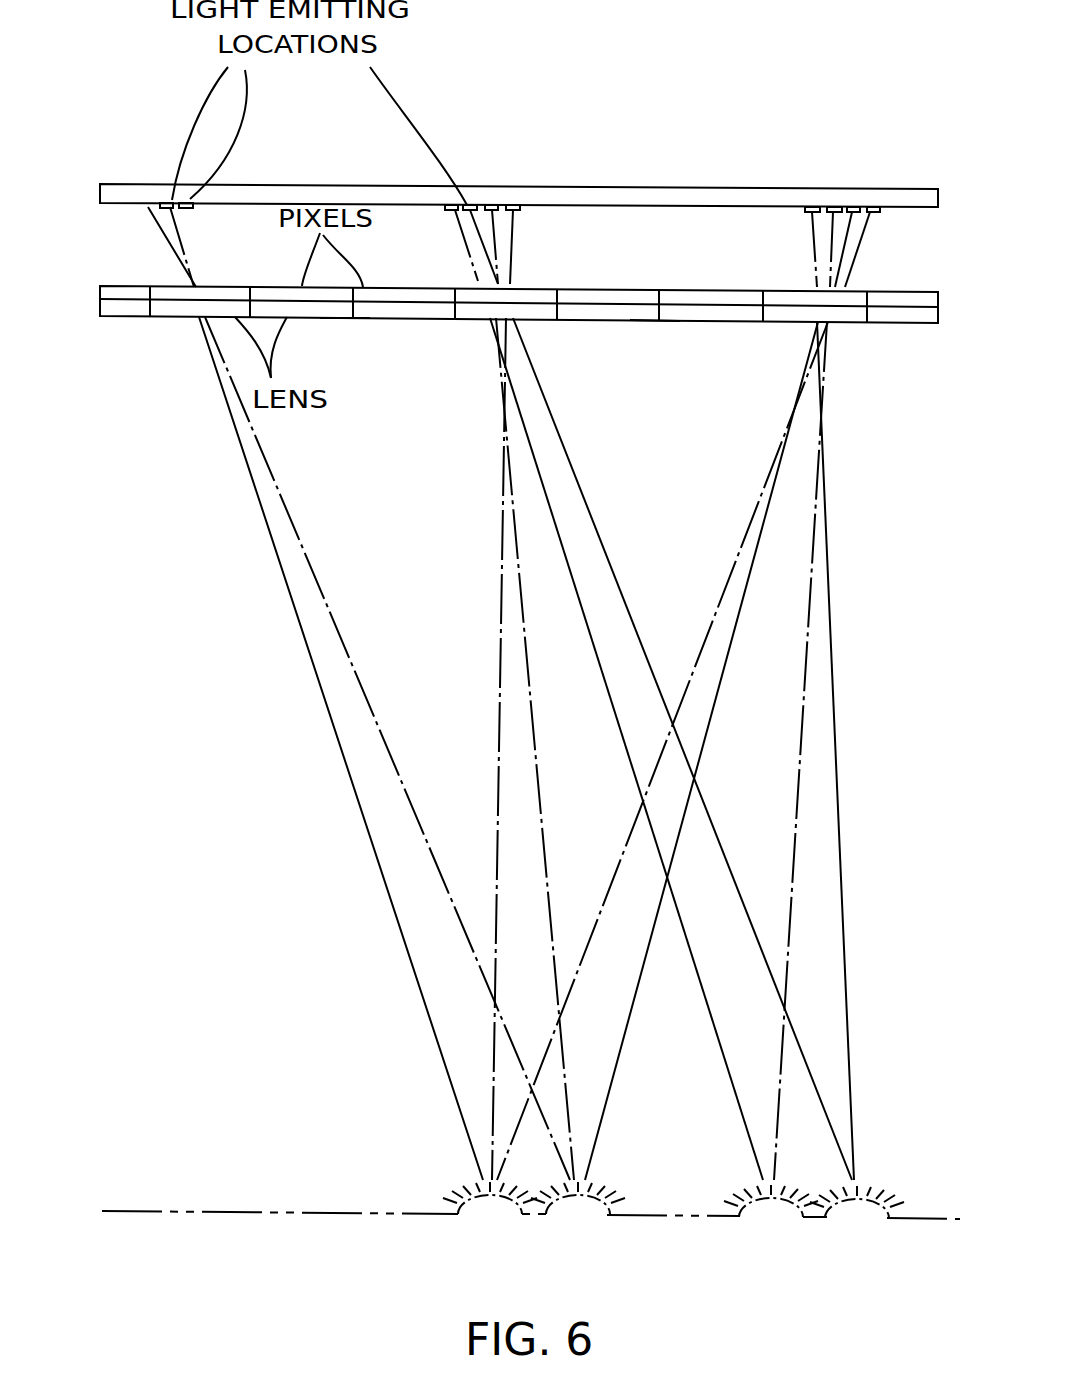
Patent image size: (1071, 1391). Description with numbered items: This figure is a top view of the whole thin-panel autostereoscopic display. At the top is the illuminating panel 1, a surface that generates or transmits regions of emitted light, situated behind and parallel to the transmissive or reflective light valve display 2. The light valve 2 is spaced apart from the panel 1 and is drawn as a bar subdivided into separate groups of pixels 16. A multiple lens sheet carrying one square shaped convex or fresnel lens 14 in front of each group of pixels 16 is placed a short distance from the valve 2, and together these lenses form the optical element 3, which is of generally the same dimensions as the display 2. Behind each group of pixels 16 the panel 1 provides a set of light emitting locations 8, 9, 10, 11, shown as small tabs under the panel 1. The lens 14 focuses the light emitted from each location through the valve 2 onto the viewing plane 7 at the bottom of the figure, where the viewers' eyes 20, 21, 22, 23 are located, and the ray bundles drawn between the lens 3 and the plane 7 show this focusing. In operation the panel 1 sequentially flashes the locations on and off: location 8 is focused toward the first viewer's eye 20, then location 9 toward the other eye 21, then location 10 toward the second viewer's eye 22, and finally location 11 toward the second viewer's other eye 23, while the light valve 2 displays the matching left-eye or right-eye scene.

The illuminating panel 1 is at (667, 188).
The light valve display 2 is at (903, 323).
The optical element 3 is at (902, 292).
The viewing plane 7 is at (187, 1210).
The light emitting location 8 is at (167, 203).
The light emitting location 9 is at (189, 203).
The light emitting location 10 is at (448, 207).
The light emitting location 11 is at (473, 204).
The lens 14 is at (363, 318).
The pixels 16 is at (272, 288).
The first viewer's eye 20 is at (493, 1211).
The first viewer's eye 21 is at (582, 1210).
The second viewer's eye 22 is at (775, 1212).
The second viewer's eye 23 is at (855, 1212).